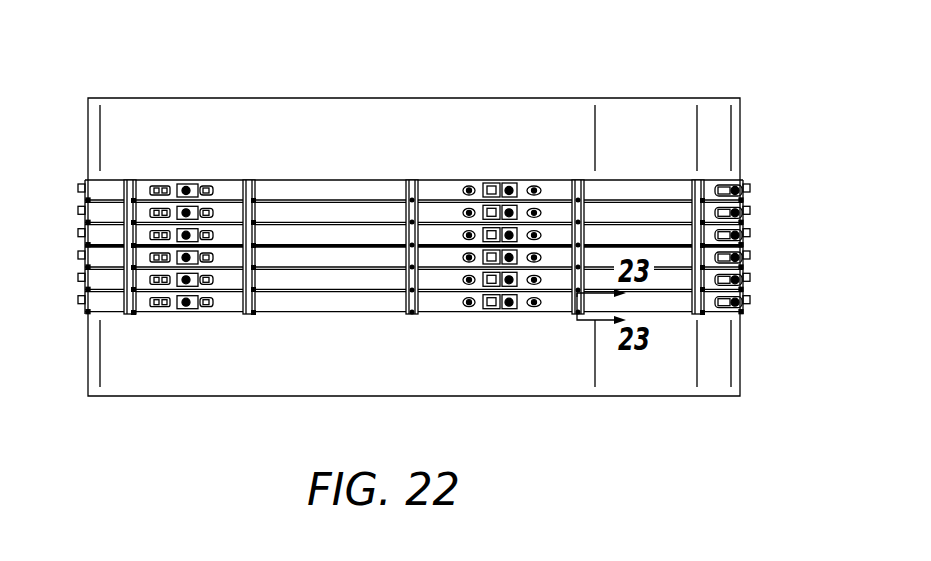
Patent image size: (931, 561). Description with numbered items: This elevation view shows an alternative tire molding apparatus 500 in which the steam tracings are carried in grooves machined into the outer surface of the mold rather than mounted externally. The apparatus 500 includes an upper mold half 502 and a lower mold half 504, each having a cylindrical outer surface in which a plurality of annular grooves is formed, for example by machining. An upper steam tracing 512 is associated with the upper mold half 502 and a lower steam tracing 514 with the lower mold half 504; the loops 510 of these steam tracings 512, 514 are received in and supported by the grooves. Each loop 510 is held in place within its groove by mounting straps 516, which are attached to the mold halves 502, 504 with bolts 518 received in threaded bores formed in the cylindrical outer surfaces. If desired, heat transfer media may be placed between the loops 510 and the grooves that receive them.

The tire molding apparatus 500 is at (742, 430).
The upper mold half 502 is at (738, 139).
The lower mold half 504 is at (735, 360).
The loop 510 is at (667, 307).
The upper steam tracing 512 is at (776, 180).
The lower steam tracing 514 is at (776, 247).
The mounting strap 516 is at (408, 304).
The bolt 518 is at (410, 222).